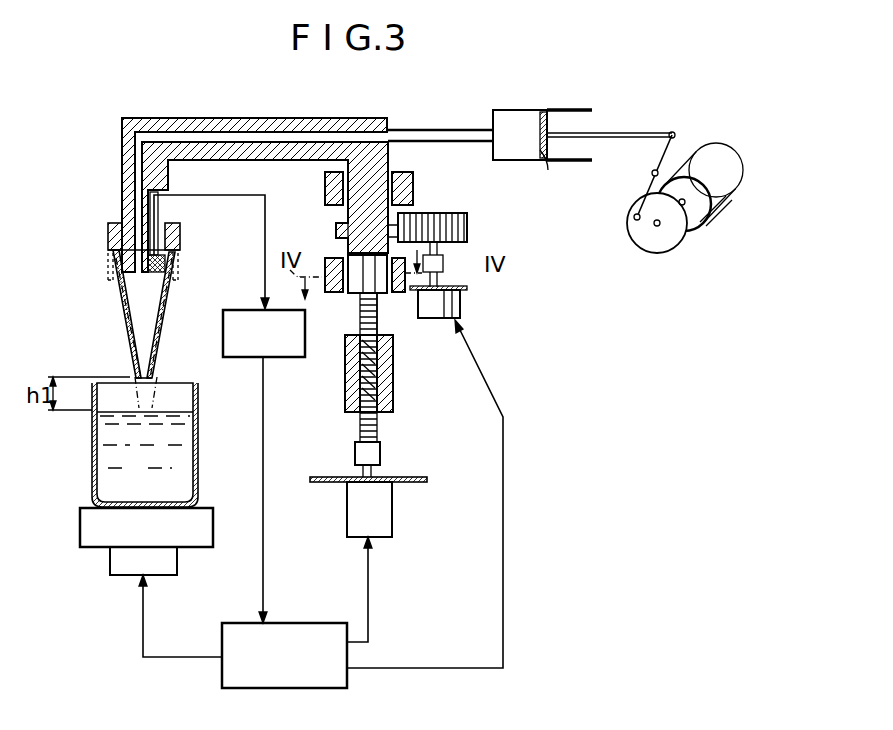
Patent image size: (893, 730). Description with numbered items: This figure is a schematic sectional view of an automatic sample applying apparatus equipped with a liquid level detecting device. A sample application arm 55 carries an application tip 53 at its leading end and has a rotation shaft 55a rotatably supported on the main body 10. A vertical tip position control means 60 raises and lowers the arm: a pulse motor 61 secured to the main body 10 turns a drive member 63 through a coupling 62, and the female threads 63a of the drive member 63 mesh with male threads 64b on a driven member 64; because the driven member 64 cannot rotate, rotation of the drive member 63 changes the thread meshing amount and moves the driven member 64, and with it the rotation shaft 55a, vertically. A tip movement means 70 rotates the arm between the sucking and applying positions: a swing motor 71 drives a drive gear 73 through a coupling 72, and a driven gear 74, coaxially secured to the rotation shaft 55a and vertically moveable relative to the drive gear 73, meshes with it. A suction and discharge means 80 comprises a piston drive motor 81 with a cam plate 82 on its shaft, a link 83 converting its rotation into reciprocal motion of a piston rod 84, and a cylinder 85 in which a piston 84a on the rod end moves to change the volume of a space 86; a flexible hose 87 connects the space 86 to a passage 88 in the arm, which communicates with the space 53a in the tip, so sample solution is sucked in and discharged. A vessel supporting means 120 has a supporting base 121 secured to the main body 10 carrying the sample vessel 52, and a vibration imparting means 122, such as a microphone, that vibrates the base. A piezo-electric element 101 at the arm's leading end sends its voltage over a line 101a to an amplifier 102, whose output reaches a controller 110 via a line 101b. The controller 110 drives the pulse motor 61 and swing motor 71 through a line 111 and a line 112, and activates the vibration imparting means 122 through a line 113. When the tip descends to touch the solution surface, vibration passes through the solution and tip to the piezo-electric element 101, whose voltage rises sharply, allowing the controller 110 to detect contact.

The passage 88 is at (194, 135).
The sample application arm 55 is at (122, 168).
The rotation shaft 55a is at (325, 192).
The driven gear 74 is at (336, 230).
The flexible hose 87 is at (426, 130).
The cylinder 85 is at (524, 110).
The space 86 is at (501, 128).
The piston 84a is at (550, 170).
The suction and discharge means 80 is at (645, 178).
The piston rod 84 is at (643, 134).
The piston drive motor 81 is at (702, 162).
The cam plate 82 is at (650, 240).
The link 83 is at (652, 168).
The drive gear 73 is at (448, 213).
The coupling 72 is at (444, 262).
The tip movement means 70 is at (491, 321).
The swing motor 71 is at (460, 310).
The main body 10 is at (337, 254).
The vertical tip position control means 60 is at (375, 366).
The driven member 64 is at (360, 320).
The male threads 64b is at (386, 322).
The drive member 63 is at (345, 410).
The female threads 63a is at (356, 380).
The coupling 62 is at (382, 455).
The pulse motor 61 is at (385, 519).
The application tip 53 is at (120, 318).
The space 53a is at (135, 348).
The piezo-electric element 101 is at (165, 265).
The line 101a is at (208, 196).
The amplifier 102 is at (248, 360).
The line 101b is at (264, 546).
The sample vessel 52 is at (92, 446).
The vessel supporting means 120 is at (110, 557).
The supporting base 121 is at (84, 530).
The vibration imparting means 122 is at (122, 580).
The controller 110 is at (298, 690).
The line 113 is at (170, 658).
The line 111 is at (368, 612).
The line 112 is at (378, 670).